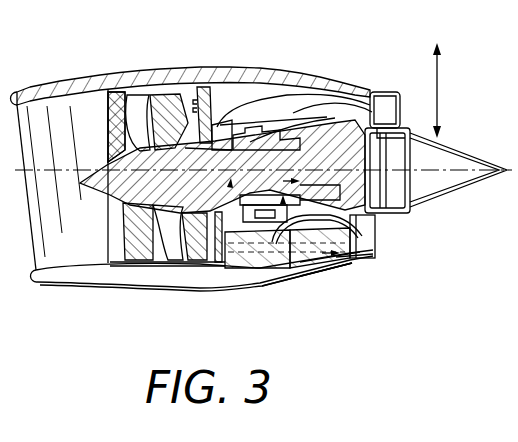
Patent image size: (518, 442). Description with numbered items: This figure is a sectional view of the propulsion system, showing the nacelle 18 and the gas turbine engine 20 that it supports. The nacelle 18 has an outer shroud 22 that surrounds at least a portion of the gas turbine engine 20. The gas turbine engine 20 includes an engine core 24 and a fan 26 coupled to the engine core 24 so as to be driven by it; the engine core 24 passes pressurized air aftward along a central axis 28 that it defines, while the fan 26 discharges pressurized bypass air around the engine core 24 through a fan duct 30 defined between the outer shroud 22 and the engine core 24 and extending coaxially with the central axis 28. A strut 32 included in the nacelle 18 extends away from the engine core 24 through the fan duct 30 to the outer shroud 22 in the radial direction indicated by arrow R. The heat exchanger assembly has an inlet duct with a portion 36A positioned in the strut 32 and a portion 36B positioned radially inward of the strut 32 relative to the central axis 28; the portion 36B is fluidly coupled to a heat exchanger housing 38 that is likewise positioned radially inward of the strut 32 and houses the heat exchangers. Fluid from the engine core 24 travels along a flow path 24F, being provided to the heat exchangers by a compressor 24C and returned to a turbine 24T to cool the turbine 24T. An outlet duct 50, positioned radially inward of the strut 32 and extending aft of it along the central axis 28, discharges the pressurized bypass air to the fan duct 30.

The nacelle 18 is at (96, 66).
The gas turbine engine 20 is at (218, 127).
The outer shroud 22 is at (326, 284).
The engine core 24 is at (276, 150).
The turbine 24T is at (337, 143).
The flow path 24F is at (392, 224).
The compressor 24C is at (224, 250).
The fan 26 is at (166, 246).
The central axis 28 is at (470, 178).
The fan duct 30 is at (346, 278).
The strut 32 is at (360, 263).
The portion of the inlet duct 36A is at (266, 256).
The portion of the inlet duct 36B is at (297, 250).
The heat exchanger housing 38 is at (353, 257).
The outlet duct 50 is at (380, 232).
The radial direction R is at (439, 93).